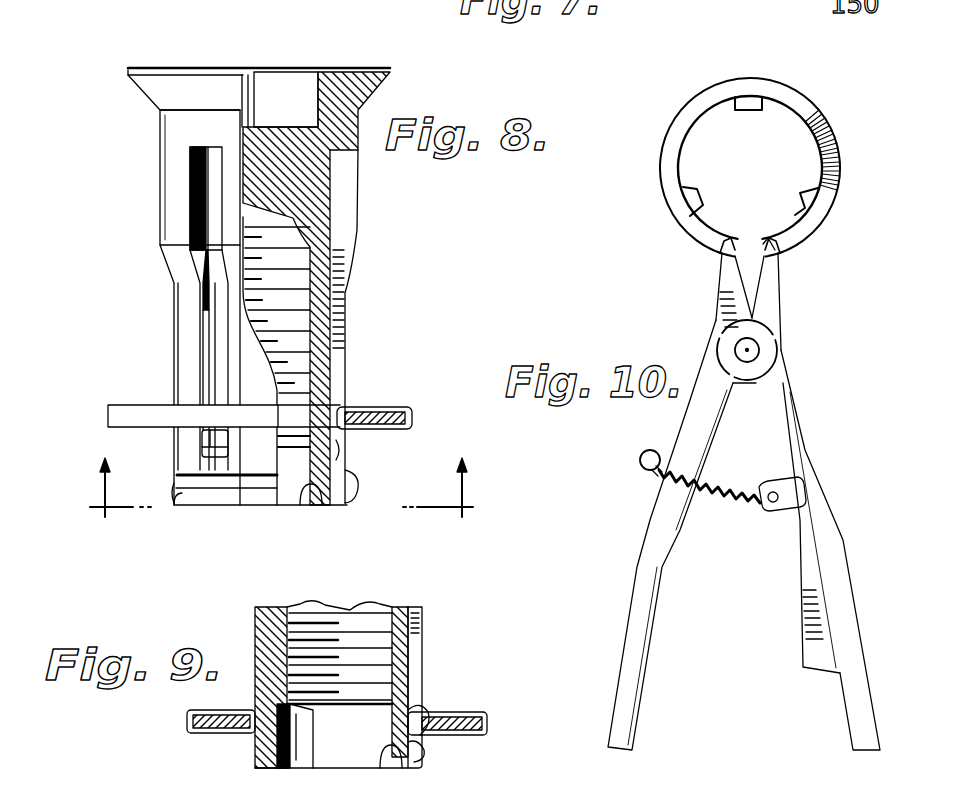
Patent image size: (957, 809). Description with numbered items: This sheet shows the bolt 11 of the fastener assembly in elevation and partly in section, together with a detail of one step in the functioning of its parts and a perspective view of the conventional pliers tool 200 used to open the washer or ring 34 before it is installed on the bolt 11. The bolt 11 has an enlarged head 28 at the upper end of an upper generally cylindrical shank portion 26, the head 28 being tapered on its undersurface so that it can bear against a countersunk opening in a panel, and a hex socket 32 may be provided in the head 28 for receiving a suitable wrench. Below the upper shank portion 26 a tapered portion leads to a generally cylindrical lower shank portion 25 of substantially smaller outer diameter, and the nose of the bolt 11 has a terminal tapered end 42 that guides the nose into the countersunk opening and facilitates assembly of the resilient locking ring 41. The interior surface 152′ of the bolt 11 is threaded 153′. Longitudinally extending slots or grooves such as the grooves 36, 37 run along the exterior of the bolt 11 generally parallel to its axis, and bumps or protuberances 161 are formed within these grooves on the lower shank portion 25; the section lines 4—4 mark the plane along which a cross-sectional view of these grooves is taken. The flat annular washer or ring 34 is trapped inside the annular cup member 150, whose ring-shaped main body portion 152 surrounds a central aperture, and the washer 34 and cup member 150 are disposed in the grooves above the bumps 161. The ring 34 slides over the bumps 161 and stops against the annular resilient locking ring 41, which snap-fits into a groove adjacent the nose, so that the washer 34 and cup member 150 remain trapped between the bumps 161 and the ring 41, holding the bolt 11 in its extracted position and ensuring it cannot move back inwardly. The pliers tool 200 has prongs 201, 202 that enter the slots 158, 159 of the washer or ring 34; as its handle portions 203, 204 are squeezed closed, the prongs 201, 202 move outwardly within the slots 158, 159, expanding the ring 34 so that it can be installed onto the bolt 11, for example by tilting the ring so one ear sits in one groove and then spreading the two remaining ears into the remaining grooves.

In FIG. 8, the bolt 11 is at (147, 138).
In FIG. 8, the enlarged head 28 is at (157, 68).
In FIG. 8, the hex socket 32 is at (308, 82).
In FIG. 8, the upper shank portion 26 is at (160, 197).
In FIG. 8, the slot or groove 37 is at (197, 273).
In FIG. 8, the lower shank portion 25 is at (167, 330).
In FIG. 9, the lower shank portion 25 is at (255, 628).
In FIG. 8, the interior surface 152′ is at (305, 227).
In FIG. 9, the interior surface 152′ is at (290, 770).
In FIG. 8, the threads 153′ is at (302, 326).
In FIG. 9, the threads 153′ is at (378, 630).
In FIG. 8, the slot or groove 36 is at (343, 249).
In FIG. 8, the cup member 150 is at (107, 420).
In FIG. 9, the cup member 150 is at (187, 718).
In FIG. 8, the washer or ring 34 is at (383, 407).
In FIG. 9, the washer or ring 34 is at (213, 733).
In FIG. 10, the washer or ring 34 is at (846, 166).
In FIG. 8, the bumps or protuberances 161 is at (340, 453).
In FIG. 9, the bumps or protuberances 161 is at (423, 707).
In FIG. 8, the main body portion 152 is at (300, 500).
In FIG. 9, the main body portion 152 is at (386, 773).
In FIG. 8, the resilient locking ring 41 is at (345, 482).
In FIG. 9, the resilient locking ring 41 is at (420, 750).
In FIG. 8, the terminal tapered end 42 is at (177, 502).
In FIG. 8, the section lines 4 is at (276, 487).
In FIG. 10, the slot 158 is at (735, 244).
In FIG. 10, the slot 159 is at (768, 240).
In FIG. 10, the assembly pliers tool 200 is at (816, 366).
In FIG. 10, the prong 201 is at (717, 256).
In FIG. 10, the prong 202 is at (781, 255).
In FIG. 10, the handle portion 203 is at (632, 640).
In FIG. 10, the handle portion 204 is at (858, 710).